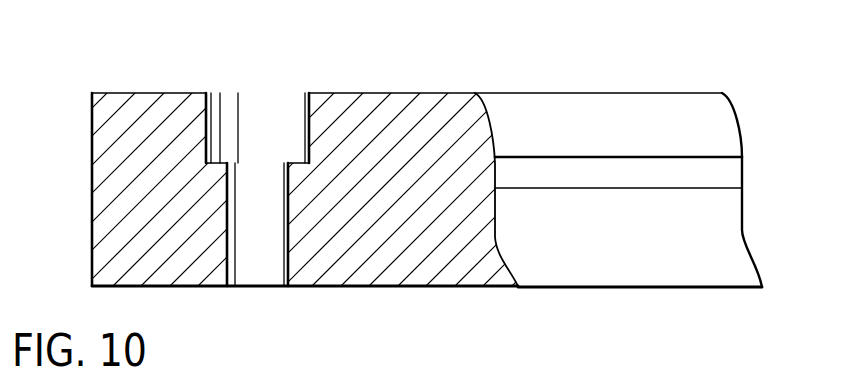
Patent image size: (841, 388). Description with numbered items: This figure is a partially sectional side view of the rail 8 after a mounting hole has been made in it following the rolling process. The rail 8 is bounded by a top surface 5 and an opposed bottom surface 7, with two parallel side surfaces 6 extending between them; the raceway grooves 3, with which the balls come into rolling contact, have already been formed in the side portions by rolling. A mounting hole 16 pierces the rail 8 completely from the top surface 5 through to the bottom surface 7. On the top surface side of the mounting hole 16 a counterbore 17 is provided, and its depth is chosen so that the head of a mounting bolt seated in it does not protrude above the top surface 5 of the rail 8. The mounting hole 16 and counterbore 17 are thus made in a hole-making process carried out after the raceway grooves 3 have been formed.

The raceway groove 3 is at (541, 172).
The top surface 5 is at (352, 93).
The side surface 6 is at (587, 270).
The bottom surface 7 is at (350, 288).
The rail 8 is at (457, 78).
The mounting hole 16 is at (252, 184).
The counterbore 17 is at (272, 107).